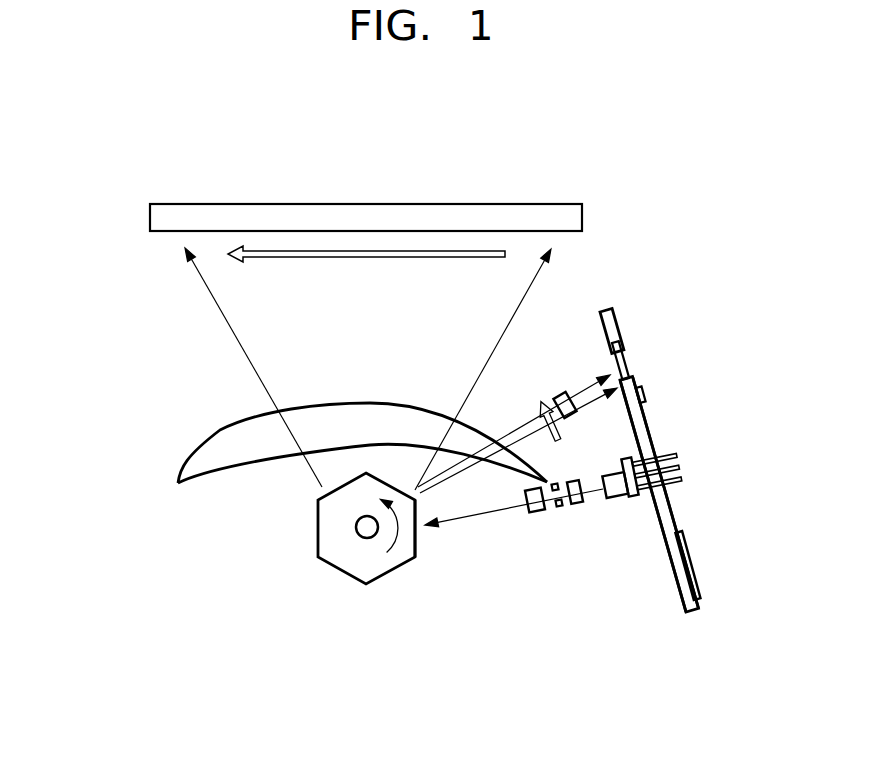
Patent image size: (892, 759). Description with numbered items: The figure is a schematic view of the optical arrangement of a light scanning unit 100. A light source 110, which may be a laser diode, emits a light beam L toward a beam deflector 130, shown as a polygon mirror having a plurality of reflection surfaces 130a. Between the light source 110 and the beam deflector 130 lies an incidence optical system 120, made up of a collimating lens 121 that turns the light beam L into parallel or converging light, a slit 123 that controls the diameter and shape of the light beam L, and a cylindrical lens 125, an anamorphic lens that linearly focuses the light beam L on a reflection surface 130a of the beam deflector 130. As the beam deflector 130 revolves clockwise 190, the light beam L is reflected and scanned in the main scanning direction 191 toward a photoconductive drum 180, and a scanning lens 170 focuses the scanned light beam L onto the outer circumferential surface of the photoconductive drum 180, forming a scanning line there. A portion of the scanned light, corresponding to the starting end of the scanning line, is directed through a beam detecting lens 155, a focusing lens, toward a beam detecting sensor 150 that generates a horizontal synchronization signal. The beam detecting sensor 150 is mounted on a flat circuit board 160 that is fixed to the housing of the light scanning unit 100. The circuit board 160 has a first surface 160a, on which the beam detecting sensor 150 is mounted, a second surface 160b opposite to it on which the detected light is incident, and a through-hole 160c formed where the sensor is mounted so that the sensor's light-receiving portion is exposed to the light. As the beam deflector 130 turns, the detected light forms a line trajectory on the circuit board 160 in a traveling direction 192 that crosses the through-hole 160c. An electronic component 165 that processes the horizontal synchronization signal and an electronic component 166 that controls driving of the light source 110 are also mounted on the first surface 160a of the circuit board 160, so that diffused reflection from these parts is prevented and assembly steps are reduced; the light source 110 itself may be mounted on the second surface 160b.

The light scanning unit 100 is at (156, 152).
The light source 110 is at (634, 498).
The incidence optical system 120 is at (635, 549).
The collimating lens 121 is at (585, 504).
The slit 123 is at (560, 508).
The cylindrical lens 125 is at (532, 512).
The beam deflector 130 is at (326, 578).
The reflection surface 130a is at (416, 548).
The beam detecting sensor 150 is at (630, 362).
The beam detecting lens 155 is at (560, 397).
The circuit board 160 is at (695, 627).
The first surface 160a is at (700, 606).
The second surface 160b is at (682, 601).
The through-hole 160c is at (610, 352).
The electronic component 165 is at (645, 392).
The electronic component 166 is at (692, 568).
The scanning lens 170 is at (178, 483).
The photoconductive drum 180 is at (152, 216).
The clockwise revolution 190 is at (386, 551).
The main scanning direction 191 is at (360, 259).
The traveling direction 192 is at (562, 434).
The light beam L is at (488, 514).